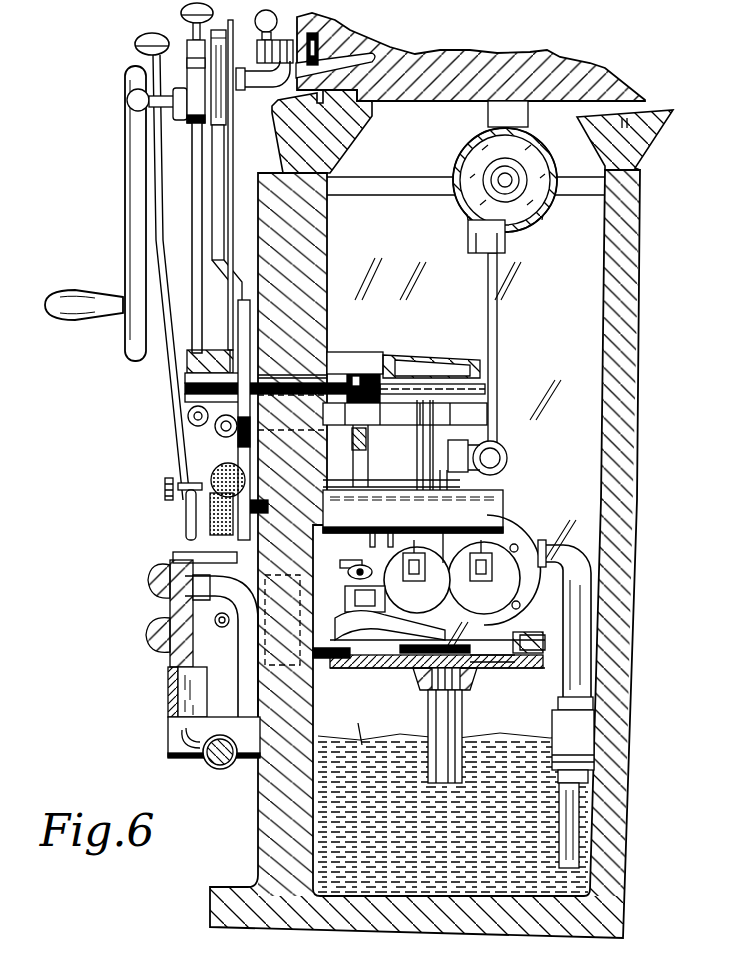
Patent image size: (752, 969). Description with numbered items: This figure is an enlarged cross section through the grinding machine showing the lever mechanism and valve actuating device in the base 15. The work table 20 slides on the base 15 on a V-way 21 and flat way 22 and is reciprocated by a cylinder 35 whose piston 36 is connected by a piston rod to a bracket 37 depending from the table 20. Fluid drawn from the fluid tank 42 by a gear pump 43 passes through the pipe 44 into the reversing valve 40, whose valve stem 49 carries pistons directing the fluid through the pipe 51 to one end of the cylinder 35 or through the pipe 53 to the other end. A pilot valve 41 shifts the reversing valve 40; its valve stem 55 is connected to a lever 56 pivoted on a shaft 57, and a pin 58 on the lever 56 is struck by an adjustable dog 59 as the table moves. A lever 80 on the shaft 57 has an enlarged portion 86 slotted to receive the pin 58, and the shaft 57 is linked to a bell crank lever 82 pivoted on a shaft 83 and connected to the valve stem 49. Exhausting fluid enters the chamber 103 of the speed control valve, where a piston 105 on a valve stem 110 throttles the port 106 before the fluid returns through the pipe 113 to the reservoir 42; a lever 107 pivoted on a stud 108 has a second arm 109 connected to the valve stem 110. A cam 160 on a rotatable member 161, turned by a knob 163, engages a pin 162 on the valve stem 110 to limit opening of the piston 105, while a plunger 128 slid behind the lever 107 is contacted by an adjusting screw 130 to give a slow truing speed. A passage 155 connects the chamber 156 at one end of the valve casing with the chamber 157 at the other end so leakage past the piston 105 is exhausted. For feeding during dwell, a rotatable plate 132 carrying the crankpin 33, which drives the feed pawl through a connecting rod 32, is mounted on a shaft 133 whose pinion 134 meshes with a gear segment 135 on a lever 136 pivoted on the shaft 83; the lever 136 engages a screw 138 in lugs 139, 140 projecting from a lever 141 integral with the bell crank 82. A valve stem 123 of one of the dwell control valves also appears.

The base 15 is at (638, 432).
The work table 20 is at (610, 79).
The V-way 21 is at (340, 120).
The flat way 22 is at (645, 105).
The connecting rod 32 is at (235, 320).
The crankpin 33 is at (185, 400).
The cylinder 35 is at (548, 218).
The piston 36 is at (518, 212).
The bracket 37 is at (530, 115).
The reversing valve 40 is at (518, 535).
The pilot valve 41 is at (383, 648).
The fluid tank 42 is at (453, 800).
The gear pump 43 is at (567, 733).
The pipe 44 is at (562, 572).
The valve stem 49 is at (484, 579).
The pipe 51 is at (500, 336).
The pipe 53 is at (502, 453).
The valve stem 55 is at (417, 576).
The lever 56 is at (216, 203).
The shaft 57 is at (420, 383).
The pin 58 is at (271, 175).
The adjustable dog 59 is at (247, 87).
The lever 80 is at (196, 230).
The bell crank lever 82 is at (502, 493).
The shaft 83 is at (208, 507).
The enlarged portion 86 is at (193, 75).
The chamber 103 is at (470, 660).
The piston 105 is at (400, 645).
The port 106 is at (458, 690).
The lever 107 is at (182, 452).
The stud 108 is at (208, 770).
The second arm 109 is at (217, 677).
The valve stem 110 is at (350, 660).
The pipe 113 is at (458, 727).
The valve stem 123 is at (233, 515).
The plunger 128 is at (217, 470).
The adjusting screw 130 is at (165, 488).
The rotatable plate 132 is at (233, 352).
The shaft 133 is at (297, 387).
The pinion 134 is at (360, 373).
The gear segment 135 is at (391, 456).
The lever 136 is at (362, 483).
The screw 138 is at (402, 543).
The lug 139 is at (358, 593).
The lug 140 is at (362, 572).
The lever 141 is at (393, 510).
The passage 155 is at (520, 657).
The chamber 156 is at (517, 640).
The chamber 157 is at (383, 736).
The cam 160 is at (200, 587).
The rotatable member 161 is at (177, 615).
The pin 162 is at (213, 622).
The knob 163 is at (140, 655).